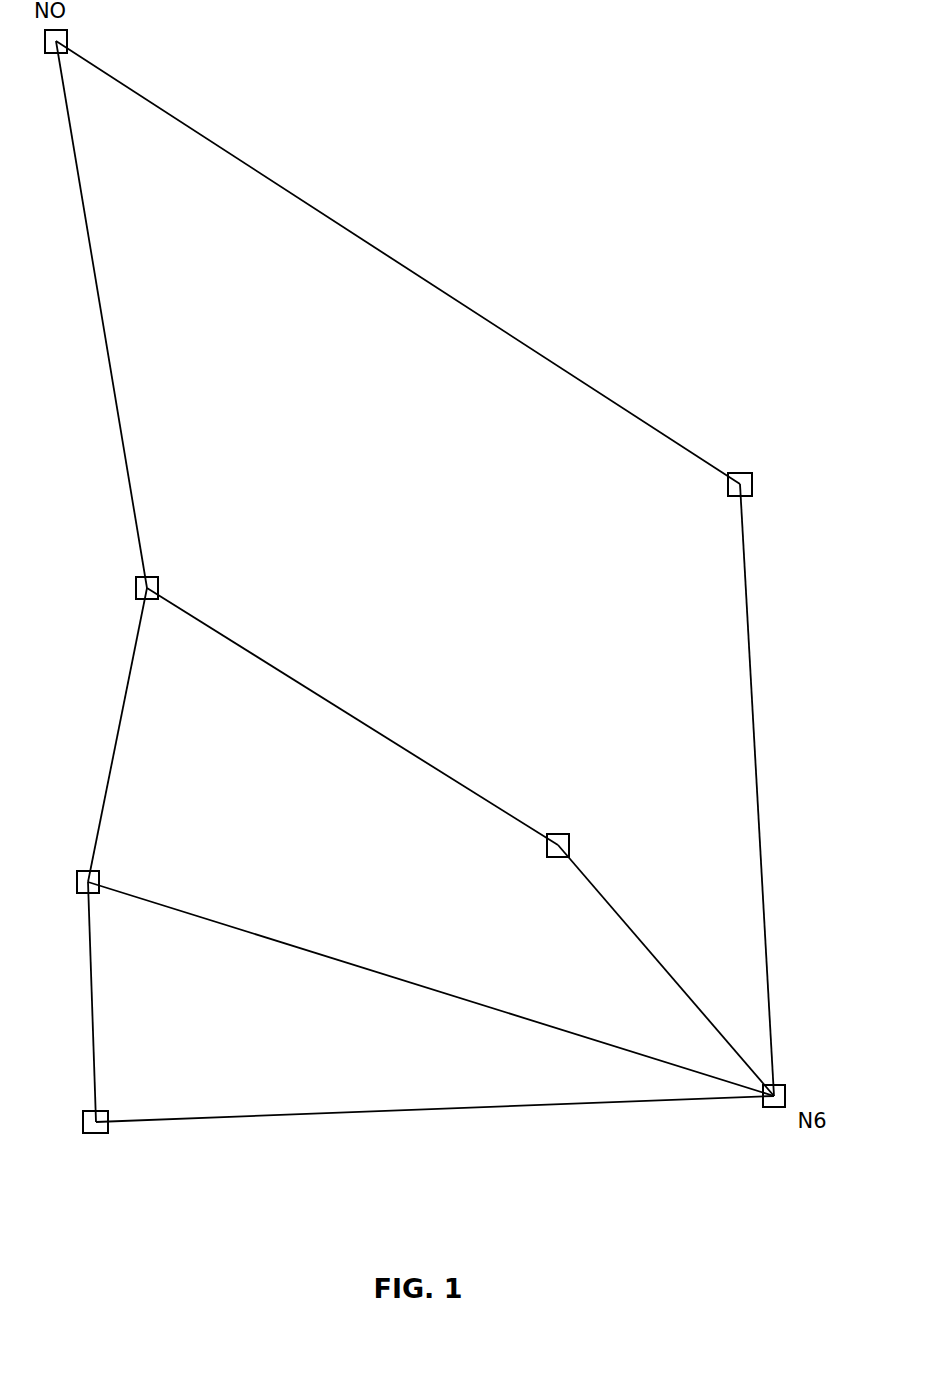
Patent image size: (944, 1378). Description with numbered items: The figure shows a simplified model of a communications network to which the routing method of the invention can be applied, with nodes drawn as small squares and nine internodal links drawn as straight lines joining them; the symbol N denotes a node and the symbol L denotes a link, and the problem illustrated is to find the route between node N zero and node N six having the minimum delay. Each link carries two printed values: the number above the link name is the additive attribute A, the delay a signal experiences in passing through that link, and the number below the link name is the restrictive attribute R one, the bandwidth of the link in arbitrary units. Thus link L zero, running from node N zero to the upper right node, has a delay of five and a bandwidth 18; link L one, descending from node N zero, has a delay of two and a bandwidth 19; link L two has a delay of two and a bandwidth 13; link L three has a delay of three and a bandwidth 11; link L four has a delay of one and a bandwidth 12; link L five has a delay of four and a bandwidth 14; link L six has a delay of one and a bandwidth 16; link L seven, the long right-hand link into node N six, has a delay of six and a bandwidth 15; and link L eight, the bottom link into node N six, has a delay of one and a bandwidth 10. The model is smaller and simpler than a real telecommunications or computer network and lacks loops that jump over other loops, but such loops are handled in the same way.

The bandwidth of link L8 10 is at (435, 1156).
The bandwidth of link L3 11 is at (110, 735).
The bandwidth of link L4 12 is at (66, 1002).
The bandwidth of link L2 13 is at (352, 716).
The bandwidth of link L5 14 is at (431, 983).
The bandwidth of link L7 15 is at (769, 790).
The bandwidth of link L6 16 is at (666, 970).
The bandwidth of link L0 18 is at (398, 262).
The bandwidth of link L1 19 is at (98, 314).